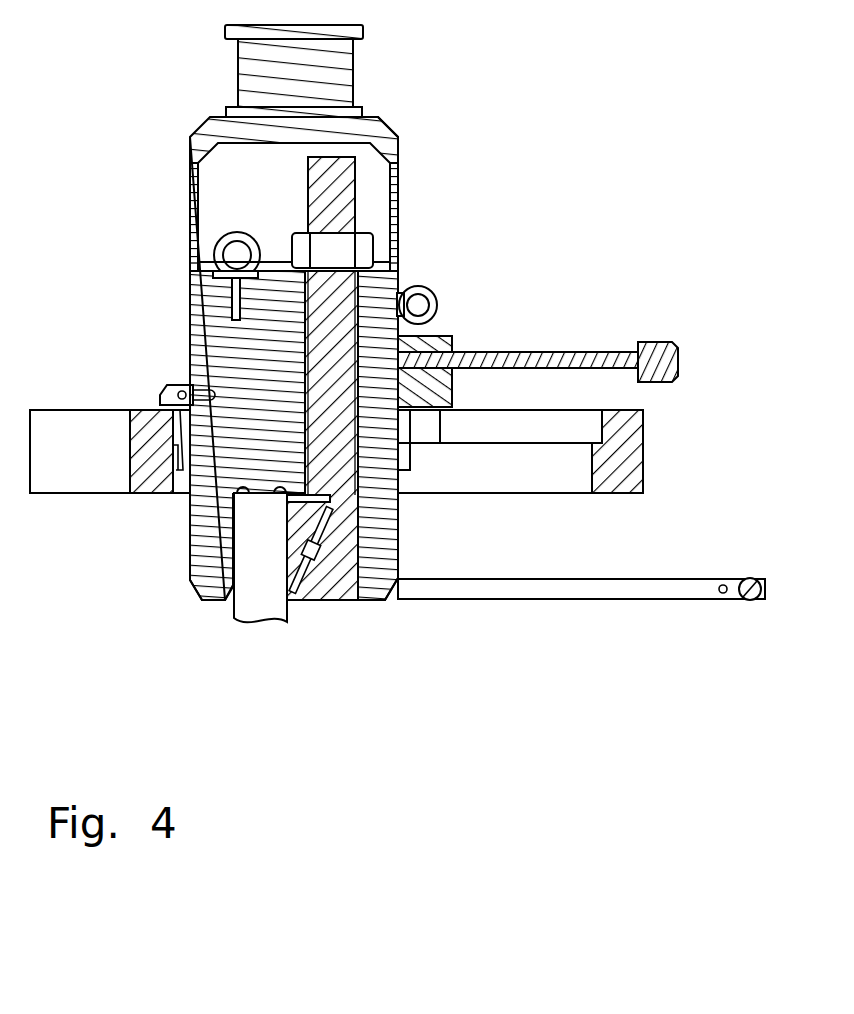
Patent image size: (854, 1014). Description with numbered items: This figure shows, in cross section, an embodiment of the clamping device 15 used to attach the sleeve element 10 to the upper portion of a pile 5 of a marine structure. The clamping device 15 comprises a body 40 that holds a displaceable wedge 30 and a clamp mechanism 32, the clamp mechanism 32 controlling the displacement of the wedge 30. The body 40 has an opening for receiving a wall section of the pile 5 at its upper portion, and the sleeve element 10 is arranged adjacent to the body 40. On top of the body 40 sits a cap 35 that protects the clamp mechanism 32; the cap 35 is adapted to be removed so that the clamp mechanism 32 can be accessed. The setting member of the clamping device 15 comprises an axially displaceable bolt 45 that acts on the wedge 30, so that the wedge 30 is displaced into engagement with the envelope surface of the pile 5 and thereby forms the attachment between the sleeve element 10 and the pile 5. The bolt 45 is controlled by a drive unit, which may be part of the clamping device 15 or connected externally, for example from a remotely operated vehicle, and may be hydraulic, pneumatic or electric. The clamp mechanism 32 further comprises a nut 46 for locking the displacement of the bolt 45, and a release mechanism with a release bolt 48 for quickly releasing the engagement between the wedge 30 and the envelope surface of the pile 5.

The clamping device 15 is at (145, 105).
The cap 35 is at (313, 82).
The clamp mechanism 32 is at (567, 158).
The nut 46 is at (328, 248).
The bolt 45 is at (370, 281).
The release bolt 48 is at (540, 357).
The body 40 is at (190, 328).
The sleeve element 10 is at (75, 433).
The pile 5 is at (253, 567).
The wedge 30 is at (307, 528).